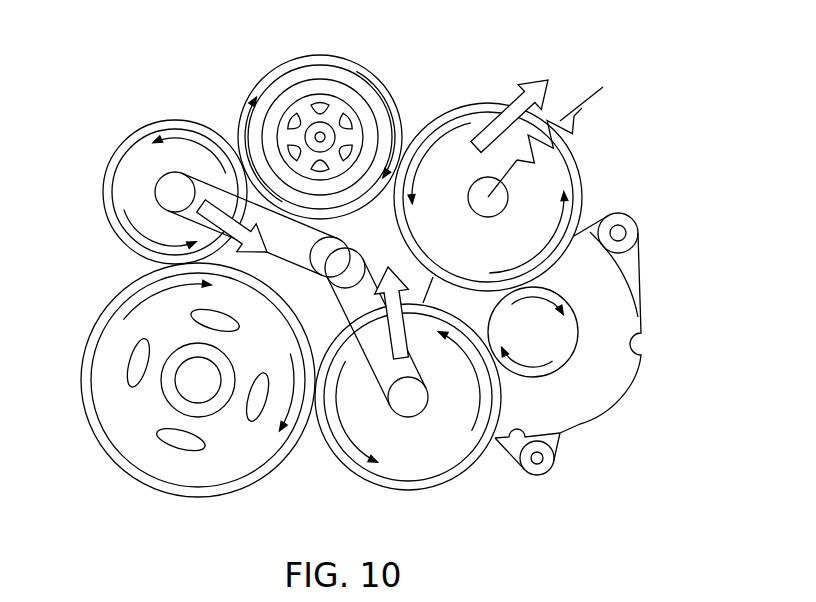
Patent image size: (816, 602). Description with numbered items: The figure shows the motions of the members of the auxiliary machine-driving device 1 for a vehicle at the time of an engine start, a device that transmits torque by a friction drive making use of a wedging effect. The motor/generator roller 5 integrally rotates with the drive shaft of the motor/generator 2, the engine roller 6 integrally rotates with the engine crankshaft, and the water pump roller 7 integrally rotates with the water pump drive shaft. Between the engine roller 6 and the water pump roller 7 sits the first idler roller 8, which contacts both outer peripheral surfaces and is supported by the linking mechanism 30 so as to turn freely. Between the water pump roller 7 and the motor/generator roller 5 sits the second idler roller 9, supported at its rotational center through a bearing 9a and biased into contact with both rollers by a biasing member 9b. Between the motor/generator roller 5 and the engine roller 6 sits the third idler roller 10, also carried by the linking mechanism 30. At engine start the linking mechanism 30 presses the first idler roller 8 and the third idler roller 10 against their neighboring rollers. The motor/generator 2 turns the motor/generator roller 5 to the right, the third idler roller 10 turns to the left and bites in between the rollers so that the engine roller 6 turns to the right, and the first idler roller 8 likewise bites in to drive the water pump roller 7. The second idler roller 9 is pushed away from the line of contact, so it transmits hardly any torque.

The auxiliary machine-driving device for a vehicle 1 is at (496, 67).
The motor/generator 2 is at (608, 288).
The motor/generator roller 5 is at (577, 350).
The engine roller 6 is at (103, 305).
The water pump roller 7 is at (383, 77).
The first idler roller 8 is at (172, 121).
The second idler roller 9 is at (583, 179).
The bearing 9a is at (495, 194).
The biasing member 9b is at (603, 92).
The third idler roller 10 is at (335, 458).
The linking mechanism 30 is at (351, 240).